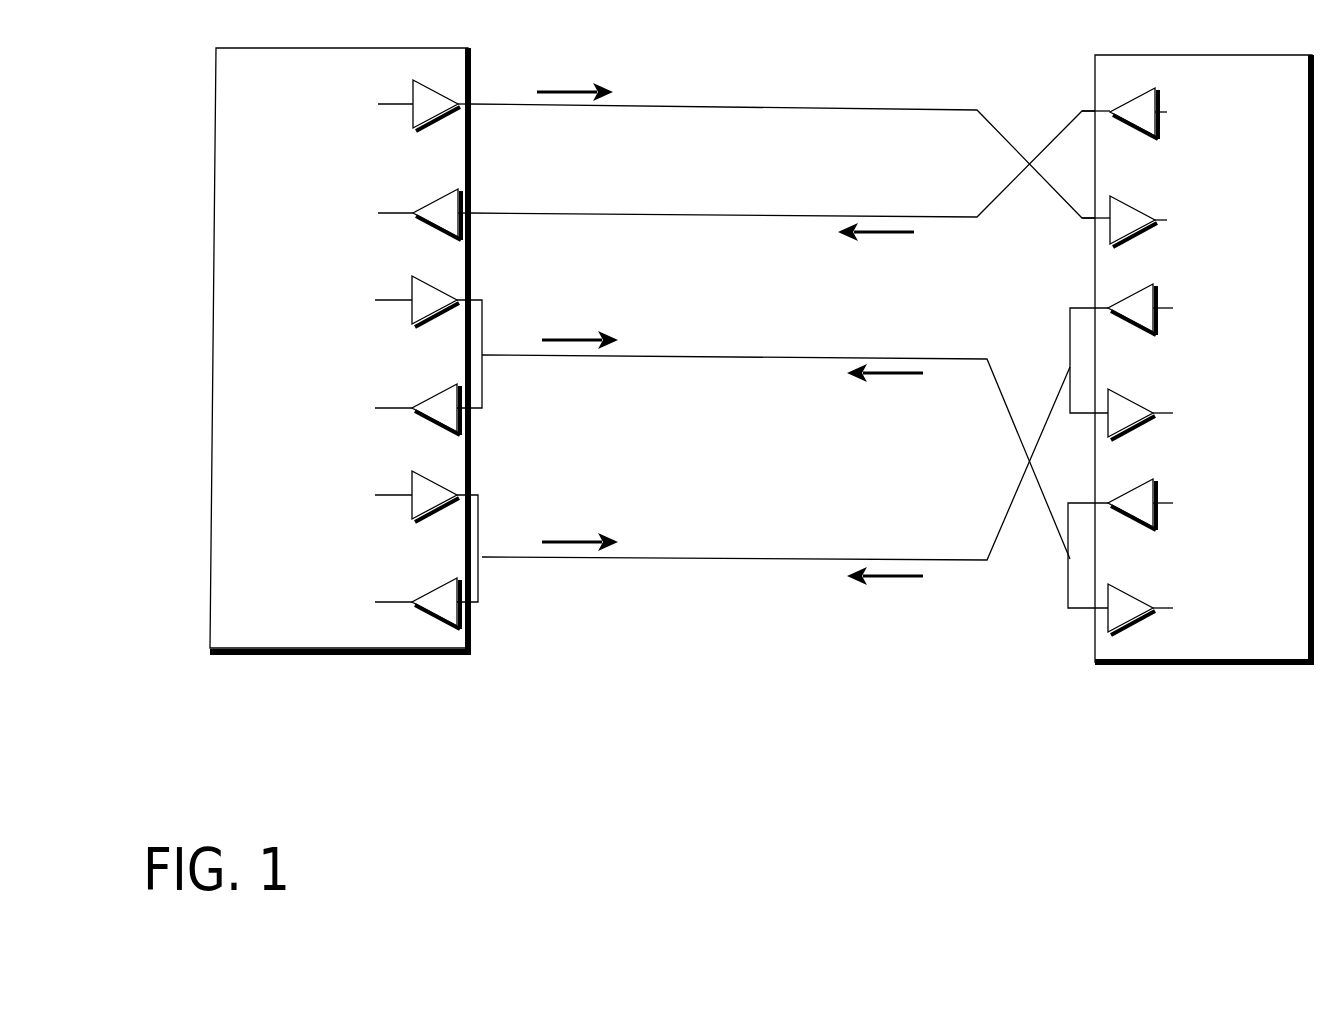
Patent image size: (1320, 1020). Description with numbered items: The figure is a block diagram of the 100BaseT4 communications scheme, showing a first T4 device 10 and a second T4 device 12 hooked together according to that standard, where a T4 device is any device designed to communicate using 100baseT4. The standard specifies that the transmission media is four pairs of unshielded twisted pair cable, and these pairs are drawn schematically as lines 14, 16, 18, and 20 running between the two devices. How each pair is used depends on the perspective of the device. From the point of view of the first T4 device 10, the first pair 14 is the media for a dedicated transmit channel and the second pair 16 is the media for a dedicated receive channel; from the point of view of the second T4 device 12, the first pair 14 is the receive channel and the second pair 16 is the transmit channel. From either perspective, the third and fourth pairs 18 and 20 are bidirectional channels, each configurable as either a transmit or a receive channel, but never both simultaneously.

The first T4 device 10 is at (342, 645).
The second T4 device 12 is at (1218, 649).
The first pair 14 is at (530, 106).
The second pair 16 is at (548, 216).
The third pair 18 is at (560, 357).
The fourth pair 20 is at (558, 559).